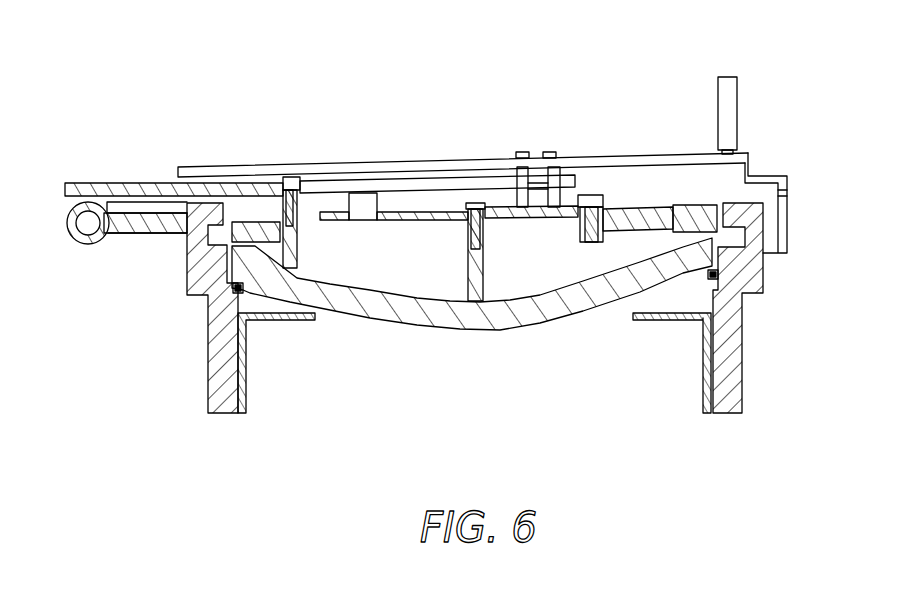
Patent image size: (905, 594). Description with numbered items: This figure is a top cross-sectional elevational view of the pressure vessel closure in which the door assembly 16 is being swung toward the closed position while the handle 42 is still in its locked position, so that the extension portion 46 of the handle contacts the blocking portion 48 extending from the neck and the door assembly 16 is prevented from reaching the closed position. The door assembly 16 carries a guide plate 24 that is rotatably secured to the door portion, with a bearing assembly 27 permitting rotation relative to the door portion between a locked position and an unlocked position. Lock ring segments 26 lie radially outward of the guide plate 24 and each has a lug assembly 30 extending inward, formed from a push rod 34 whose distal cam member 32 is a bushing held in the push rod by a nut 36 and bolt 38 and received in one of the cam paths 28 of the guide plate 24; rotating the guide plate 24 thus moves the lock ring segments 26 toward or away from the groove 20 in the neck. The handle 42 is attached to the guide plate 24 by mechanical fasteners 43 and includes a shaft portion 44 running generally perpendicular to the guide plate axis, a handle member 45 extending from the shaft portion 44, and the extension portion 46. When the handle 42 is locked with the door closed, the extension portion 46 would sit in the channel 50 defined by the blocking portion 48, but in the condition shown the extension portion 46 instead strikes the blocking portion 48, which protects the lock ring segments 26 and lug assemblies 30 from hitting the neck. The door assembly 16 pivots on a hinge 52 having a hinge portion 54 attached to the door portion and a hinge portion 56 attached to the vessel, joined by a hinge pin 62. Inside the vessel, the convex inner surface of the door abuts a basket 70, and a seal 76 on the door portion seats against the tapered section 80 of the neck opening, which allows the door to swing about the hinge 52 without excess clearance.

The door assembly 16 is at (497, 99).
The groove 20 is at (742, 236).
The guide plate 24 is at (380, 212).
The lock ring segments 26 is at (258, 234).
The bearing assembly 27 is at (457, 233).
The cam paths 28 is at (355, 211).
The lug assembly 30 is at (601, 255).
The cam member 32 is at (578, 195).
The push rod 34 is at (650, 210).
The nut 36 is at (697, 206).
The bolt 38 is at (595, 195).
The handle 42 is at (641, 146).
The mechanical fasteners 43 is at (549, 152).
The shaft portion 44 is at (465, 158).
The handle member 45 is at (737, 110).
The extension portion 46 is at (768, 172).
The blocking portion 48 is at (783, 188).
The channel 50 is at (772, 197).
The hinge 52 is at (85, 268).
The hinge portion 54 is at (247, 182).
The hinge portion 56 is at (148, 230).
The hinge pin 62 is at (90, 223).
The basket 70 is at (702, 364).
The seal 76 is at (239, 297).
The tapered section 80 is at (231, 270).